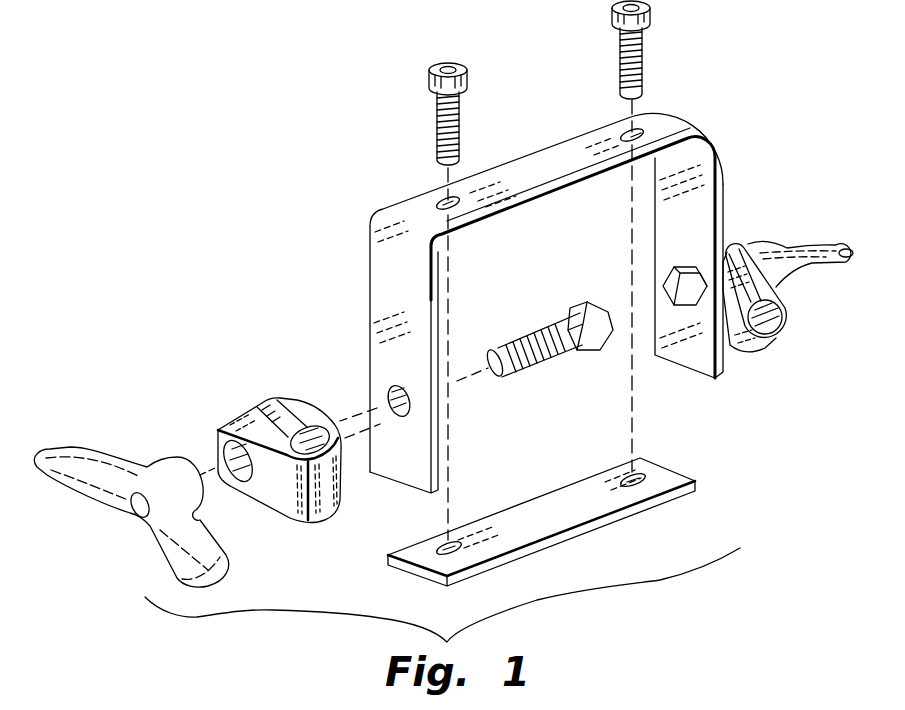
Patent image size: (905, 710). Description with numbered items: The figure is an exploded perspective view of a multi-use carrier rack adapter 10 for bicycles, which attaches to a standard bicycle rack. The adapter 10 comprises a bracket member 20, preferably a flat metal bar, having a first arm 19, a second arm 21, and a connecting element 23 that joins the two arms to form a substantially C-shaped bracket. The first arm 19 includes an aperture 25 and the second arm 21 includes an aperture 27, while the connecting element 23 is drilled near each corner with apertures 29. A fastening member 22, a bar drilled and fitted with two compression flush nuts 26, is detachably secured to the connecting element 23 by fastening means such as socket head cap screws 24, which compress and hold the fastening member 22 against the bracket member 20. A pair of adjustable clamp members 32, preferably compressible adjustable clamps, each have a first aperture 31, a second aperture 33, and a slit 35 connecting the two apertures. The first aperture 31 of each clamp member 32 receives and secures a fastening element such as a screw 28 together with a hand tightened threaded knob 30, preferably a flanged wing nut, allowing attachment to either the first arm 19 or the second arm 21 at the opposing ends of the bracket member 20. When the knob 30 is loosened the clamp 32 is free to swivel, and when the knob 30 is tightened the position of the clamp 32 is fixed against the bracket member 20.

The multi-use carrier rack adapter 10 is at (450, 321).
The first arm 19 is at (383, 297).
The bracket member 20 is at (533, 158).
The second arm 21 is at (725, 177).
The fastening member 22 is at (603, 520).
The connecting element 23 is at (505, 217).
The socket head cap screws 24 is at (440, 110).
The aperture 25 is at (376, 396).
The compression flush nuts 26 is at (438, 543).
The aperture 27 is at (680, 268).
The screw 28 is at (560, 349).
The aperture 29 is at (440, 202).
The hand tightened threaded knob 30 is at (786, 245).
The first aperture 31 is at (223, 460).
The adjustable clamp member 32 is at (757, 347).
The second aperture 33 is at (783, 305).
The slit 35 is at (737, 248).